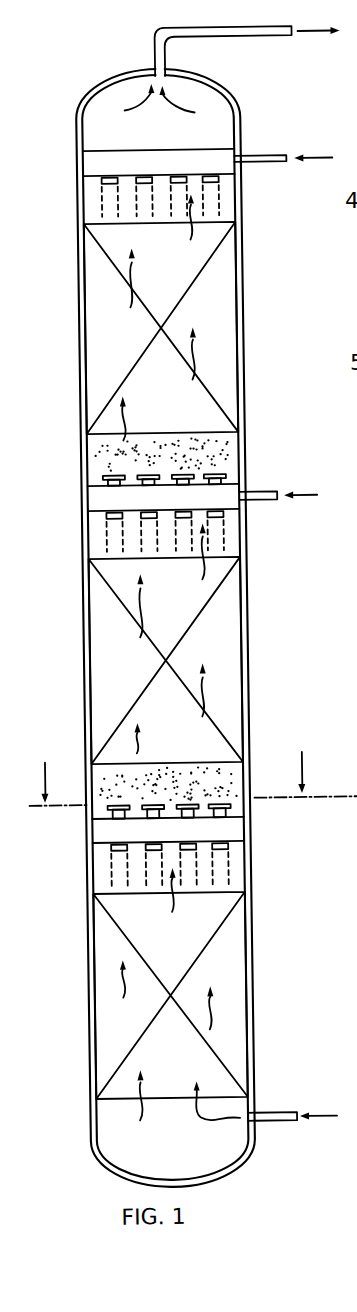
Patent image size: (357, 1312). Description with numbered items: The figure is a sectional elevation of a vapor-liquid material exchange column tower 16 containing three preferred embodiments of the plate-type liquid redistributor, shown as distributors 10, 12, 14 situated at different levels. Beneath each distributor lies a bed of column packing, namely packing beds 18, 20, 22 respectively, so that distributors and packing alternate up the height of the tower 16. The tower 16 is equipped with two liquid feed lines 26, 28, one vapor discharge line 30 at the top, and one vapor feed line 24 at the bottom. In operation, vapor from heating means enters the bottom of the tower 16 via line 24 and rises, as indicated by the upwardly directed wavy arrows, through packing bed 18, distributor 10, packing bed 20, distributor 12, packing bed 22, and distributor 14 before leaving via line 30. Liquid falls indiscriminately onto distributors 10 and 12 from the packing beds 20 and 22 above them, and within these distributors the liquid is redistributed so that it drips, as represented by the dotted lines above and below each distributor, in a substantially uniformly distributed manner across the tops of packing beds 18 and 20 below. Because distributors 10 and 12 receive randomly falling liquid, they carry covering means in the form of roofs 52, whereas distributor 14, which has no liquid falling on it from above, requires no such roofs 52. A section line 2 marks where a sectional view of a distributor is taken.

The section line 2- 2 is at (193, 767).
The plate-type liquid redistributor 10 is at (94, 831).
The plate-type liquid redistributor 12 is at (103, 499).
The plate-type liquid redistributor 14 is at (113, 161).
The vapor-liquid material exchange column tower 16 is at (130, 70).
The bed of column packing 18 is at (100, 1047).
The bed of column packing 20 is at (100, 668).
The bed of column packing 22 is at (111, 324).
The vapor feed line 24 is at (283, 1090).
The liquid feed line 26 is at (253, 503).
The liquid feed line 28 is at (253, 166).
The vapor discharge line 30 is at (226, 29).
The roofs 52 is at (101, 466).